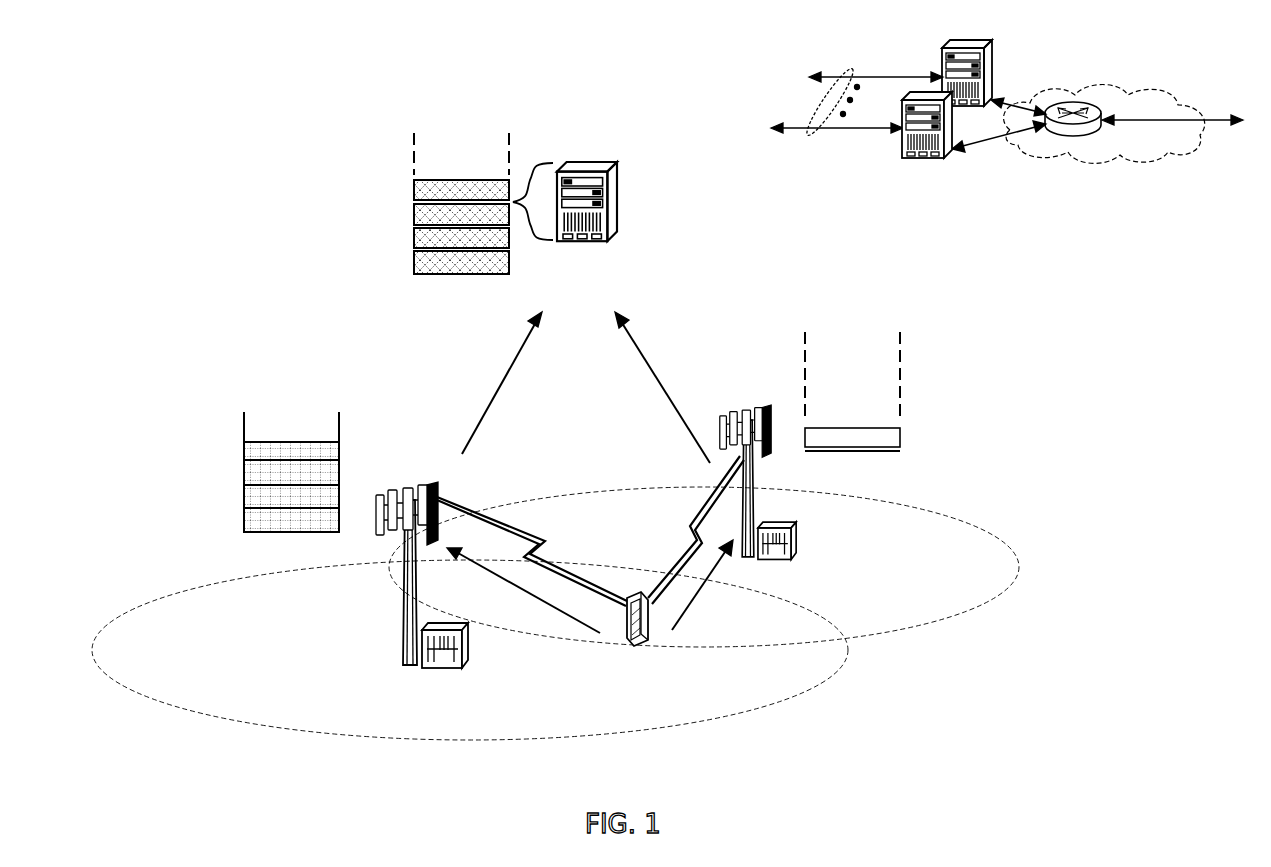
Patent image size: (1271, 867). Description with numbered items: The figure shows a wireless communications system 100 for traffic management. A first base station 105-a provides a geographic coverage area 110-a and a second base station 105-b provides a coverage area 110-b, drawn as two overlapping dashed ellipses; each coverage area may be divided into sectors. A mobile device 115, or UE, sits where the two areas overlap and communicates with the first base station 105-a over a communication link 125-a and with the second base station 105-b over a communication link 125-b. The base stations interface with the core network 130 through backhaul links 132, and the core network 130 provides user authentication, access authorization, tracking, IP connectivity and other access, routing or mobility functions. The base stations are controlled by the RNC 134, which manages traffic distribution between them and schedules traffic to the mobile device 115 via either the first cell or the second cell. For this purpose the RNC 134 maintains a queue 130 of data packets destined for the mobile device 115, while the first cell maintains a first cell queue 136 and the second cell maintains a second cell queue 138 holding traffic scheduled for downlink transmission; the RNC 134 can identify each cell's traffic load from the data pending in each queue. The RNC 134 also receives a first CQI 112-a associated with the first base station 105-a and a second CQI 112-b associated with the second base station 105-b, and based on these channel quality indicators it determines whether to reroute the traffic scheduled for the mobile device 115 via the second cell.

The wireless communications system 100 is at (958, 758).
The first base station 105-a is at (410, 668).
The second base station 105-b is at (787, 557).
The geographic coverage area 110-a is at (395, 740).
The coverage area 110-b is at (988, 532).
The first CQI 112-a is at (522, 473).
The second CQI 112-b is at (678, 471).
The mobile device 115 is at (652, 640).
The communication link 125-a is at (545, 560).
The communication link 125-b is at (706, 530).
The core network 130 is at (414, 248).
The backhaul links 132 is at (808, 143).
The RNC 134 is at (612, 238).
The first cell queue 136 is at (244, 525).
The second cell queue 138 is at (903, 443).